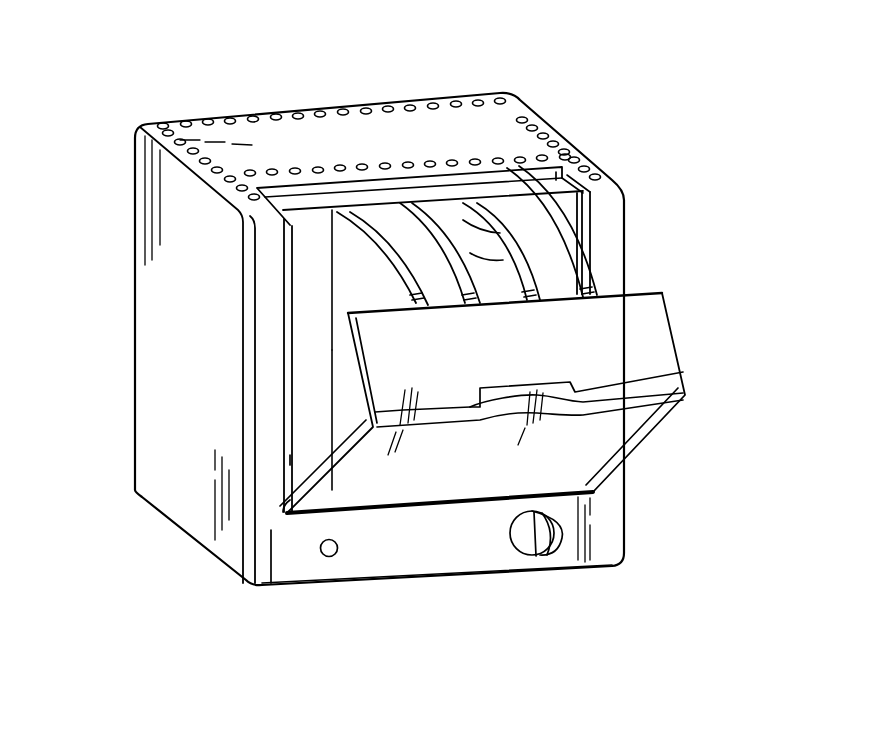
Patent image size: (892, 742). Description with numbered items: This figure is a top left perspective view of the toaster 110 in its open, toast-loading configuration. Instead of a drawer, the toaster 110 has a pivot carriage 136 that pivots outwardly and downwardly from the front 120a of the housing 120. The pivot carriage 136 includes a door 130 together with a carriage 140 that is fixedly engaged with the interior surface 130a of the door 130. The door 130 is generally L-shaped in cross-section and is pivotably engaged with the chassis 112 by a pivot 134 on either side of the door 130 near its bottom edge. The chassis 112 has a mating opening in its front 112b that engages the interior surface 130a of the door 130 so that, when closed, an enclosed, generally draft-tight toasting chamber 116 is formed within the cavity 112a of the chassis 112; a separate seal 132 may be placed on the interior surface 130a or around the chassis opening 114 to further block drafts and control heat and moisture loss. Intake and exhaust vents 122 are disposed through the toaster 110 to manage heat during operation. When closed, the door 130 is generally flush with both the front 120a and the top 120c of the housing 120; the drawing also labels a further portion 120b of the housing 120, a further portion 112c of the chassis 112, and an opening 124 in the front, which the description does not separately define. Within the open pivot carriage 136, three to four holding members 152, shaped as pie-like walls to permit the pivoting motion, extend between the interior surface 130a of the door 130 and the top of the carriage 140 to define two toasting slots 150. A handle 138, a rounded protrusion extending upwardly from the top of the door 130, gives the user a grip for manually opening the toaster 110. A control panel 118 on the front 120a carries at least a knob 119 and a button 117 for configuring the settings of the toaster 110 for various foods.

The toaster 110 is at (512, 71).
The chassis 112 is at (317, 242).
The cavity of the chassis 112a is at (515, 260).
The front of the chassis 112b is at (307, 277).
The container top edge 112c is at (550, 193).
The chassis opening 114 is at (333, 343).
The toasting chamber 116 is at (570, 195).
The button 117 is at (334, 553).
The control panel 118 is at (445, 565).
The knob 119 is at (552, 545).
The housing 120 is at (335, 130).
The front of the housing 120a is at (613, 233).
The housing left side 120b is at (147, 207).
The top of the housing 120c is at (515, 112).
The intake and/or exhaust vents 122 is at (257, 115).
The latch 124 is at (292, 455).
The door 130 is at (633, 428).
The interior surface of the door 130a is at (295, 477).
The seal 132 is at (307, 313).
The pivot 134 is at (287, 510).
The pivot carriage 136 is at (682, 348).
The handle 138 is at (643, 380).
The carriage 140 is at (397, 237).
The toasting slots 150 is at (545, 245).
The holding members 152 is at (463, 282).